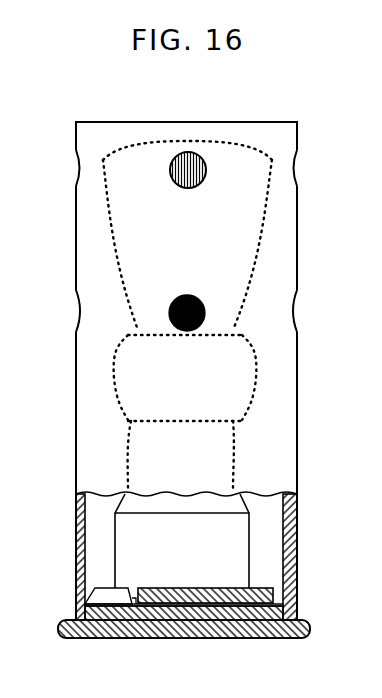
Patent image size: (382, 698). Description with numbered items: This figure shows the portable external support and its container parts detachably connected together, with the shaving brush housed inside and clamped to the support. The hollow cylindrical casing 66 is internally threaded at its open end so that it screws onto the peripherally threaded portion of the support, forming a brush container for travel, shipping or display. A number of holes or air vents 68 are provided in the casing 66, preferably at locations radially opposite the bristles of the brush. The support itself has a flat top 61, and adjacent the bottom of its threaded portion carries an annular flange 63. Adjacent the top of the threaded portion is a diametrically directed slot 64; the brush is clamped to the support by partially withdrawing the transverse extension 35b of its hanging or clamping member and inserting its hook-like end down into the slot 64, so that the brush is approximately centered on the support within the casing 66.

The hollow cylindrical casing 66 is at (229, 110).
The air vents 68 is at (78, 163).
The flat top 61 is at (264, 588).
The diametrically directed slot 64 is at (125, 604).
The extension 35b is at (205, 603).
The annular flange 63 is at (305, 637).